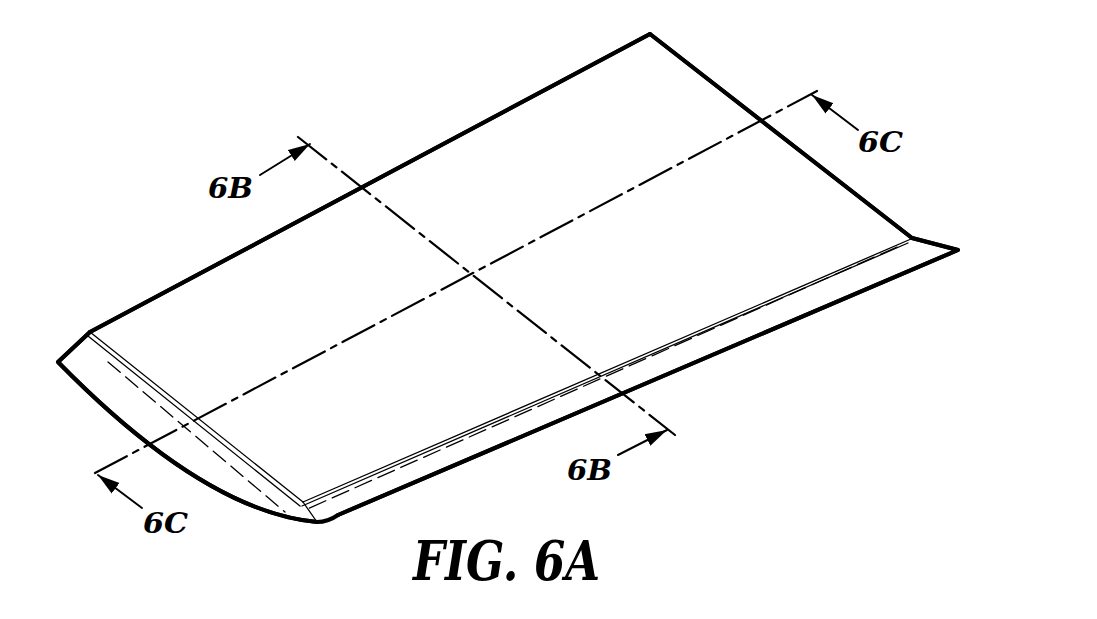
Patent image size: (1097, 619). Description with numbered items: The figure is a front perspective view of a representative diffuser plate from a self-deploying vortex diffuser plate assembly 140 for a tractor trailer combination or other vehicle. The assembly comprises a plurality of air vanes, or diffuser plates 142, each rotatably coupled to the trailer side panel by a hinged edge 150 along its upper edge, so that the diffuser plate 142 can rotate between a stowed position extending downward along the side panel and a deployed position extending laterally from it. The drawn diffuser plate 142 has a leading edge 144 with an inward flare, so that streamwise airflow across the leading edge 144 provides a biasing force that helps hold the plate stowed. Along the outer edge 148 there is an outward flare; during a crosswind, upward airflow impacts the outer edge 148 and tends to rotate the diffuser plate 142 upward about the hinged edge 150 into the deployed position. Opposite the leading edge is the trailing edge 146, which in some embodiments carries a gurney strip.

The self-deploying vortex diffuser plate assembly 140 is at (152, 210).
The diffuser plate 142 is at (623, 323).
The leading edge 144 is at (108, 398).
The trailing edge 146 is at (863, 200).
The outer edge 148 is at (802, 306).
The hinged edge 150 is at (487, 120).